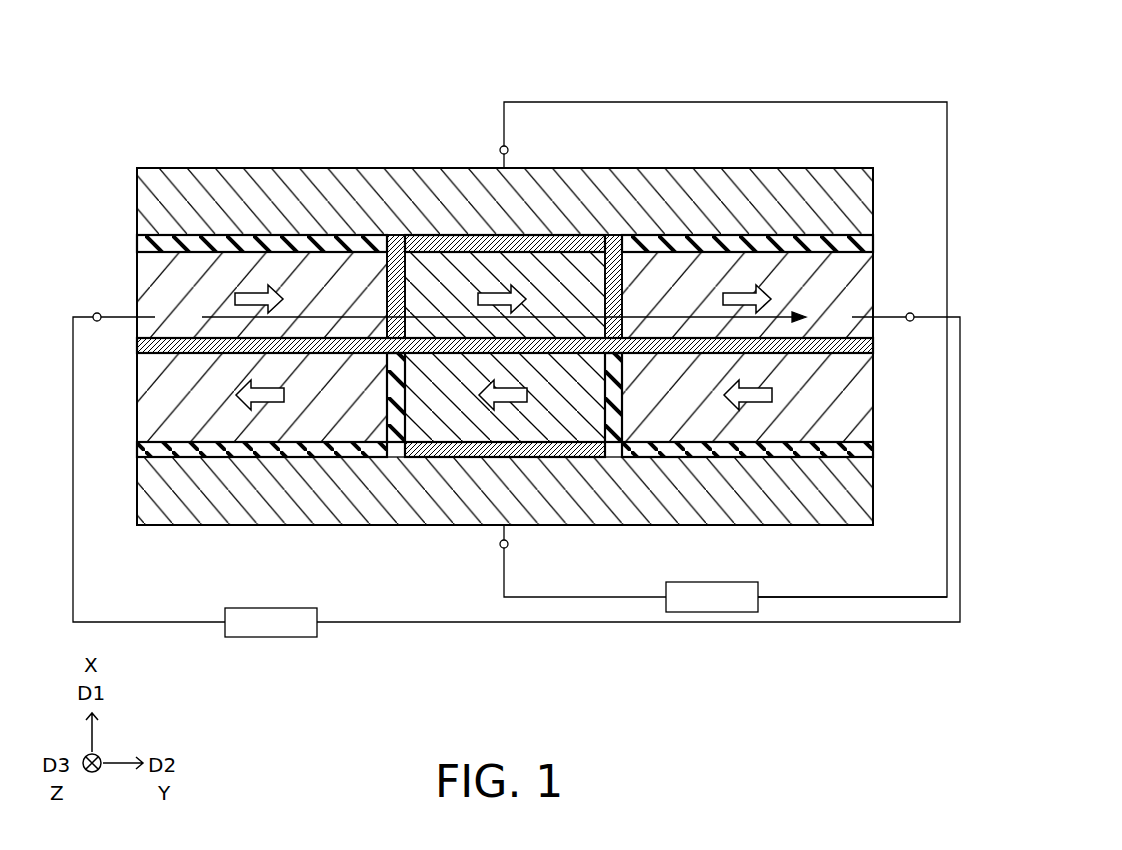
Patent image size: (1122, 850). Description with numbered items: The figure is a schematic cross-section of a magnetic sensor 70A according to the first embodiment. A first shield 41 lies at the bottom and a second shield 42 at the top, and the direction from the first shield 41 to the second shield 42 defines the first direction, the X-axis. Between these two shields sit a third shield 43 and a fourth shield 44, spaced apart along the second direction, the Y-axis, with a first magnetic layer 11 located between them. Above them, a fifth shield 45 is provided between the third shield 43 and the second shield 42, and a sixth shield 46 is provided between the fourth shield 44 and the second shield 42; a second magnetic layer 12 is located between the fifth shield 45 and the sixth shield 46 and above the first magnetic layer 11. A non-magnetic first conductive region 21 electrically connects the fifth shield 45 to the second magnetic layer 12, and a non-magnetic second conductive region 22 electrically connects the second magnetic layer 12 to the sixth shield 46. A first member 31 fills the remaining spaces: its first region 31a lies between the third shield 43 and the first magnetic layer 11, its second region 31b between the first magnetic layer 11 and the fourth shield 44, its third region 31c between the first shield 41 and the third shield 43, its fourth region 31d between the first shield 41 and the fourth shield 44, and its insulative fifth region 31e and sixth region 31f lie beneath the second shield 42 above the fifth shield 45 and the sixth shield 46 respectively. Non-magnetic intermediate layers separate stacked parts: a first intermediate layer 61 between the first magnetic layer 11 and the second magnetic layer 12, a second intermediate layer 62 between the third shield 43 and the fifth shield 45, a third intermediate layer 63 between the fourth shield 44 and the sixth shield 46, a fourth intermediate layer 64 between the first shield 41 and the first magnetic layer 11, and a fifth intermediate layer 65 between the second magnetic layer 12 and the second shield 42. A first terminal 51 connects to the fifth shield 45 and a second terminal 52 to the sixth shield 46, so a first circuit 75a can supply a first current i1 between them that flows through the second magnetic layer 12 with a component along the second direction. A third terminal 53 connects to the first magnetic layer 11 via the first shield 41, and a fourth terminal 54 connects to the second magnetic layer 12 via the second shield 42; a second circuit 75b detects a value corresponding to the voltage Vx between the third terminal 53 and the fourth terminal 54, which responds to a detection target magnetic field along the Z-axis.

The magnetic sensor 70A is at (864, 82).
The first magnetic layer 11 is at (571, 425).
The second magnetic layer 12 is at (563, 270).
The first conductive region 21 is at (393, 300).
The second conductive region 22 is at (613, 270).
The first member 31 is at (532, 461).
The first region 31a is at (398, 405).
The second region 31b is at (613, 425).
The third region 31c is at (290, 450).
The fourth region 31d is at (777, 450).
The fifth region 31e is at (231, 250).
The sixth region 31f is at (753, 248).
The first shield 41 is at (862, 491).
The second shield 42 is at (862, 205).
The third shield 43 is at (150, 402).
The fourth shield 44 is at (862, 416).
The fifth shield 45 is at (148, 290).
The sixth shield 46 is at (862, 283).
The first terminal 51 is at (97, 322).
The second terminal 52 is at (912, 322).
The third terminal 53 is at (501, 548).
The fourth terminal 54 is at (500, 147).
The first intermediate layer 61 is at (543, 352).
The second intermediate layer 62 is at (180, 345).
The third intermediate layer 63 is at (833, 352).
The fourth intermediate layer 64 is at (442, 456).
The fifth intermediate layer 65 is at (442, 243).
The first circuit 75a is at (250, 608).
The second circuit 75b is at (712, 582).
The first current i1 is at (323, 314).
The voltage Vx is at (852, 575).